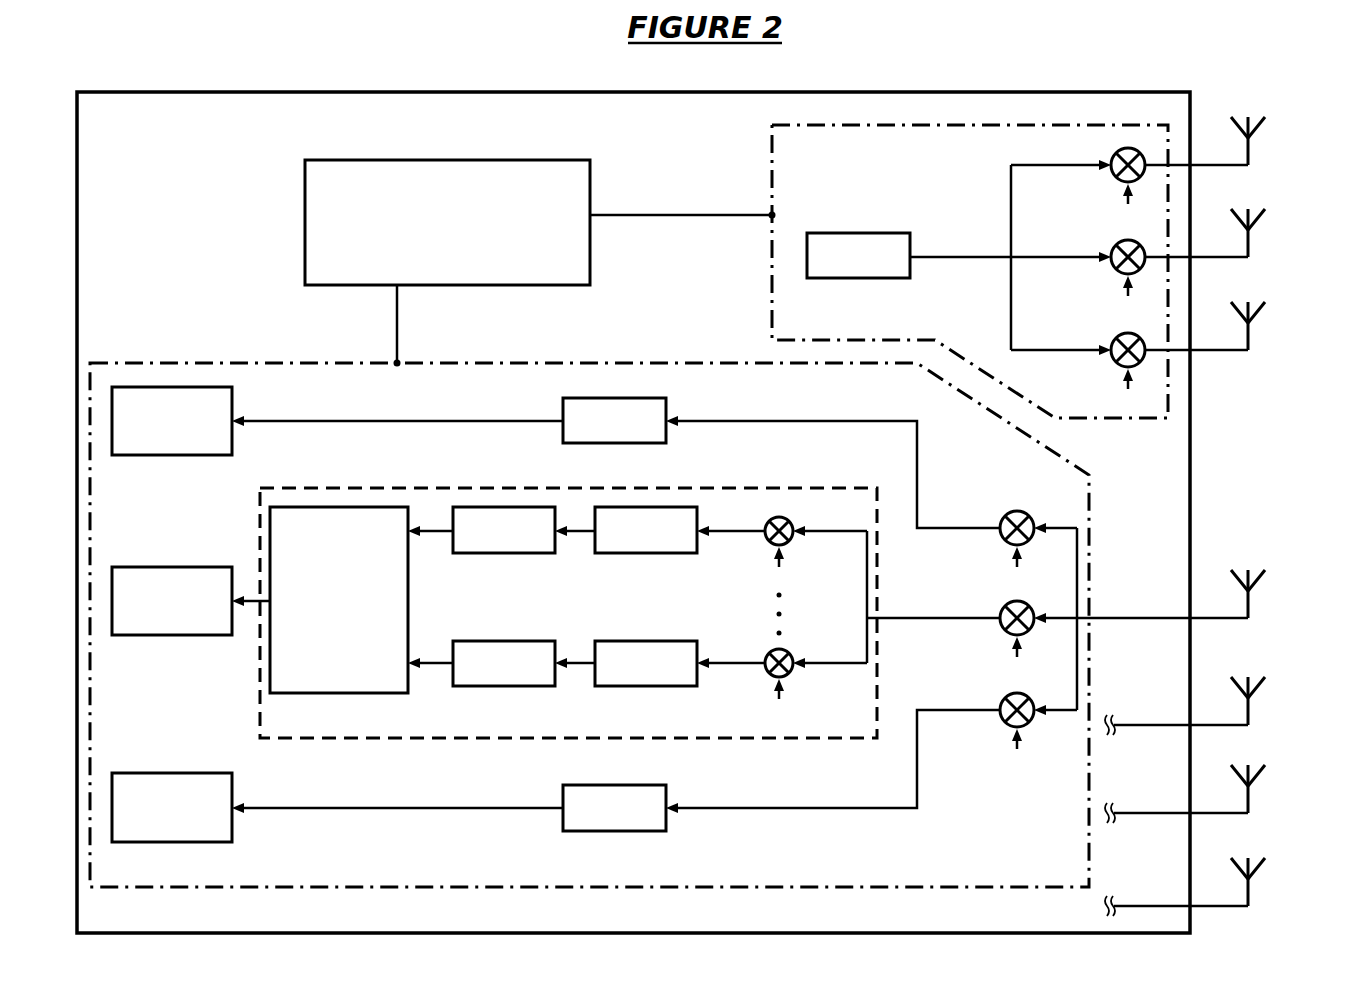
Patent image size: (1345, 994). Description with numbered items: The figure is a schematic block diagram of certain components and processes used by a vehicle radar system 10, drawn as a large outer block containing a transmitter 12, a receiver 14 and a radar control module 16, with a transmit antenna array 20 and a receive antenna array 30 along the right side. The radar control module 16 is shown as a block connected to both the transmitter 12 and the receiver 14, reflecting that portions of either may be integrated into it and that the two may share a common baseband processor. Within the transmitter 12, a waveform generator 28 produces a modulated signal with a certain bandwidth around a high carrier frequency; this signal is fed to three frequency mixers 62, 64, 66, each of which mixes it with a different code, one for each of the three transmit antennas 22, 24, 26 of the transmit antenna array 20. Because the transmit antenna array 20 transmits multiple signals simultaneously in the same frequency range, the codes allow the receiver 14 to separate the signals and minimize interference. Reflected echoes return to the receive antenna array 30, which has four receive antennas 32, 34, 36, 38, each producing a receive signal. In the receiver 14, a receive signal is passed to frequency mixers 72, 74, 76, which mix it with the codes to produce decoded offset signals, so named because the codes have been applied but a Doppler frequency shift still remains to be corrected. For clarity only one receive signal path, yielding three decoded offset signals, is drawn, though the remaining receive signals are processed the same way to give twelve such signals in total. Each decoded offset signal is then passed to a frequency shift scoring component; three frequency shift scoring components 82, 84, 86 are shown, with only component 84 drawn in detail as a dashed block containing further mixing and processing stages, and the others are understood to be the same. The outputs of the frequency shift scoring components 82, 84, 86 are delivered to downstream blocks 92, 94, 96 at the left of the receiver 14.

The vehicle radar system 10 is at (871, 68).
The transmitter 12 is at (771, 183).
The receiver 14 is at (527, 362).
The radar control module 16 is at (447, 222).
The transmit antenna array 20 is at (1257, 92).
The transmit antenna 22 is at (1250, 150).
The transmit antenna 24 is at (1250, 242).
The transmit antenna 26 is at (1250, 335).
The waveform generator 28 is at (858, 255).
The receive antenna array 30 is at (1257, 535).
The receive antenna 32 is at (1250, 603).
The receive antenna 34 is at (1250, 710).
The receive antenna 36 is at (1250, 798).
The receive antenna 38 is at (1250, 891).
The frequency mixer 62 is at (1115, 158).
The frequency mixer 64 is at (1115, 250).
The frequency mixer 66 is at (1115, 343).
The frequency mixer 72 is at (1014, 511).
The frequency mixer 74 is at (1012, 601).
The frequency mixer 76 is at (1012, 693).
The frequency shift scoring component 82 is at (614, 420).
The frequency shift scoring component 84 is at (527, 487).
The frequency shift scoring component 86 is at (614, 808).
The output block 92 is at (186, 457).
The output block 94 is at (186, 637).
The output block 96 is at (185, 772).